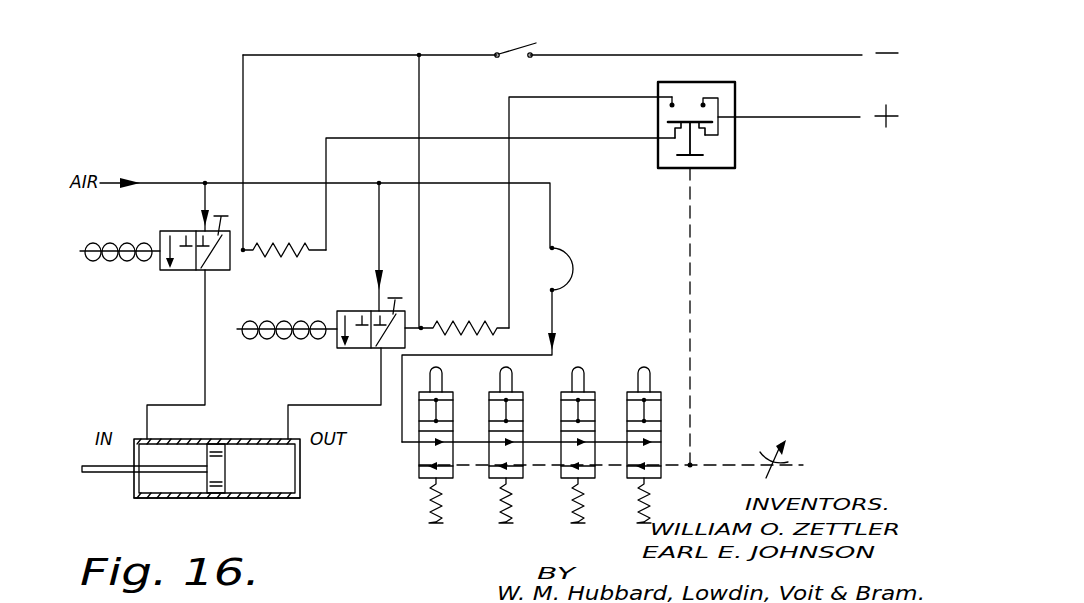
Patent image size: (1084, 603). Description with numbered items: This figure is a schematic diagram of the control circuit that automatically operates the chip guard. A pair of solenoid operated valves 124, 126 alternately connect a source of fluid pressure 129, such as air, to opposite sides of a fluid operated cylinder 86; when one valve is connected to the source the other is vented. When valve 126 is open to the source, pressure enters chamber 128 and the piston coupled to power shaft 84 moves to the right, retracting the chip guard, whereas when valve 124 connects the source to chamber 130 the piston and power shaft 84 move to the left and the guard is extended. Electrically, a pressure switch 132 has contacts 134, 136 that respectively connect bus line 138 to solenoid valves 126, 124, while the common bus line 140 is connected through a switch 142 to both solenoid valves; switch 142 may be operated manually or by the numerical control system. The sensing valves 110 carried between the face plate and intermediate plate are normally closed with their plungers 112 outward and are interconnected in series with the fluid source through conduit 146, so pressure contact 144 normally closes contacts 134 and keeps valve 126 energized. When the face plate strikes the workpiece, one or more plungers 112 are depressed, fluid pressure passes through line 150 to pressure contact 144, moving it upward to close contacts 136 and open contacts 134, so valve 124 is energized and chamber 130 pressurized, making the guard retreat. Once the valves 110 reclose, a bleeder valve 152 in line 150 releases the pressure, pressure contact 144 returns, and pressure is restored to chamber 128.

The power shaft 84 is at (125, 472).
The fluid operated cylinder 86 is at (262, 498).
The sensing valves 110 is at (419, 470).
The plungers 112 is at (438, 369).
The solenoid operated valve 124 is at (347, 278).
The solenoid operated valve 126 is at (177, 272).
The chamber 128 is at (180, 452).
The source of fluid pressure 129 is at (188, 152).
The chamber 130 is at (288, 470).
The pressure switch 132 is at (707, 170).
The contacts 134 is at (668, 126).
The contacts 136 is at (672, 102).
The bus line 138 is at (835, 85).
The common bus line 140 is at (812, 22).
The switch 142 is at (497, 52).
The pressure contact 144 is at (683, 143).
The conduit 146 is at (556, 303).
The line 150 is at (692, 338).
The bleeder valve 152 is at (783, 453).